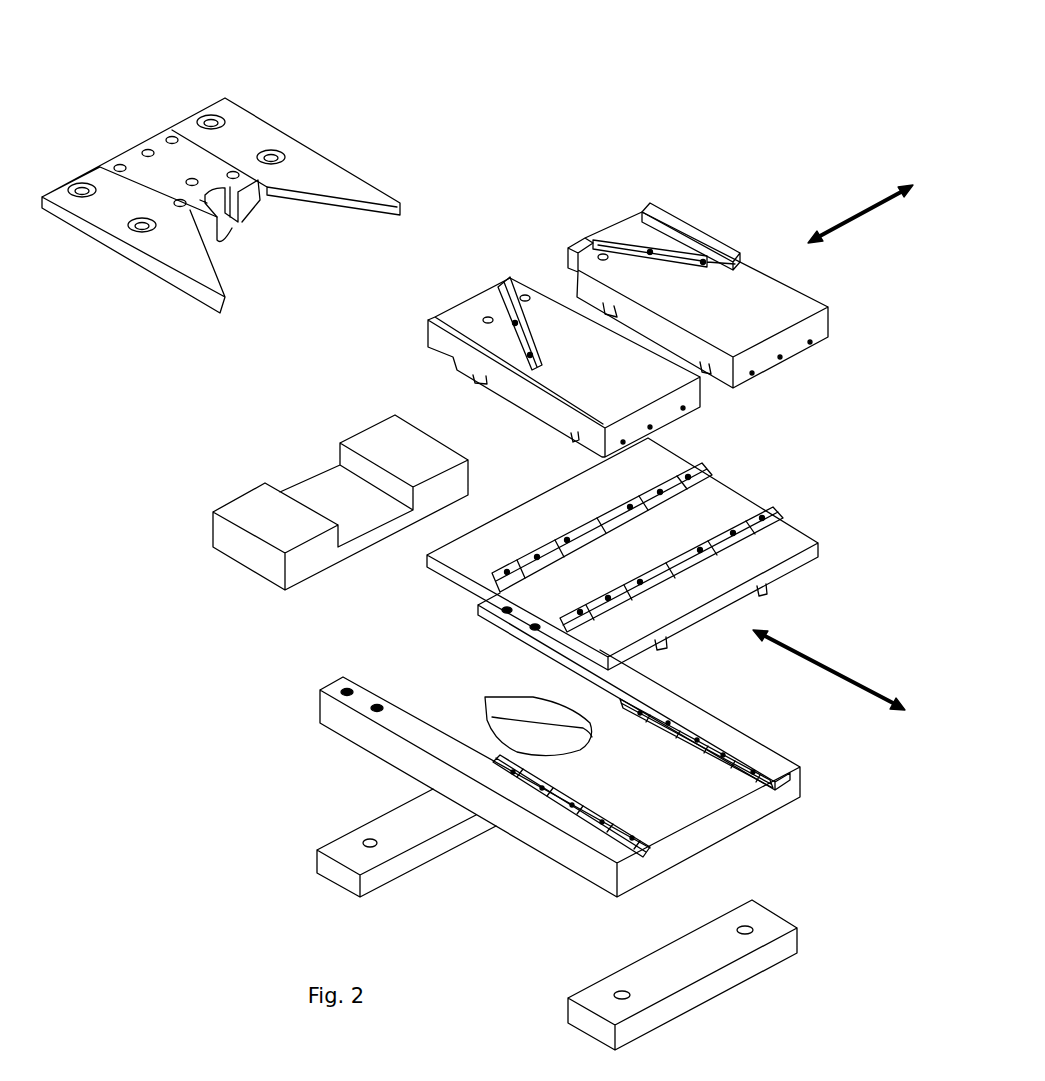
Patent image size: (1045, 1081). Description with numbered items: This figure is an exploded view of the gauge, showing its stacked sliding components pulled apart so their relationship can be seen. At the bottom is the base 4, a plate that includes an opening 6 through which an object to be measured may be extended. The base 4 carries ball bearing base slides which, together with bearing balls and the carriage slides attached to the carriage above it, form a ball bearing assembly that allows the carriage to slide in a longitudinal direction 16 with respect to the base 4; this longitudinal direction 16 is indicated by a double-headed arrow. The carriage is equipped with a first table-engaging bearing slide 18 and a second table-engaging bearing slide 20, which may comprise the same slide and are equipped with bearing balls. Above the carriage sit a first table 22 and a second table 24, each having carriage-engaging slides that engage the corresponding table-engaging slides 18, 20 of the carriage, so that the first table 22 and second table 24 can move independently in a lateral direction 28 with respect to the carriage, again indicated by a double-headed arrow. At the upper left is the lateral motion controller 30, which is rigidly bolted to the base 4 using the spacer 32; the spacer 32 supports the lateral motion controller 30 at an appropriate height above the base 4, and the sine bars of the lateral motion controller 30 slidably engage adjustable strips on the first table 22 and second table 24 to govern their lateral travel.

The base 4 is at (763, 810).
The opening 6 is at (522, 737).
The longitudinal direction 16 is at (822, 662).
The first table-engaging bearing slide 18 is at (580, 607).
The second table-engaging bearing slide 20 is at (778, 508).
The first table 22 is at (428, 326).
The second table 24 is at (693, 283).
The lateral direction 28 is at (860, 210).
The lateral motion controller 30 is at (238, 127).
The spacer 32 is at (227, 538).